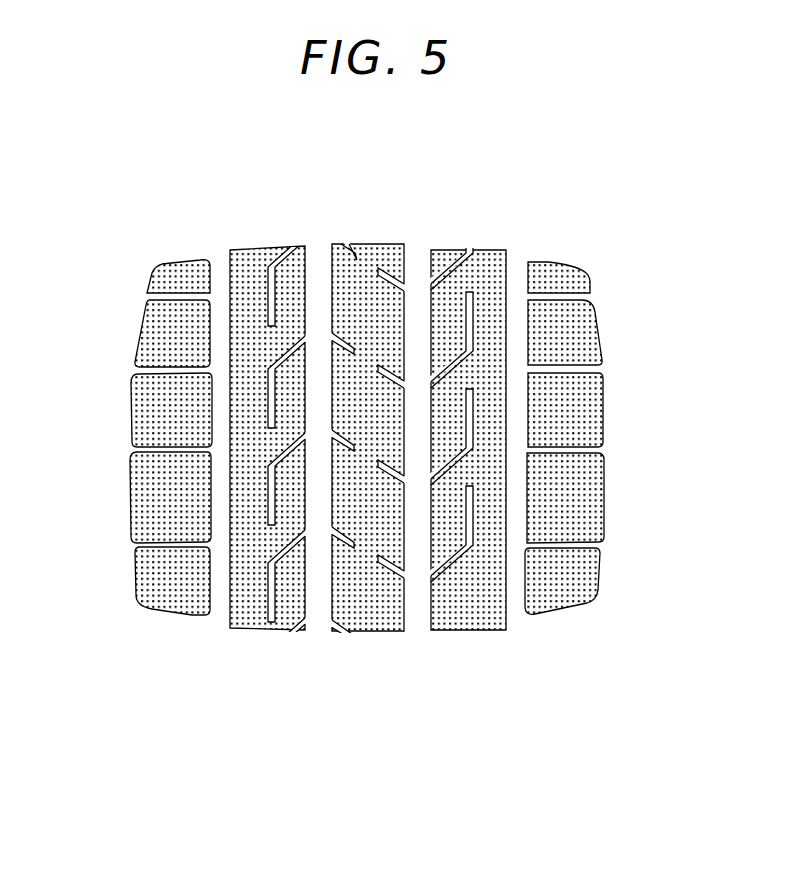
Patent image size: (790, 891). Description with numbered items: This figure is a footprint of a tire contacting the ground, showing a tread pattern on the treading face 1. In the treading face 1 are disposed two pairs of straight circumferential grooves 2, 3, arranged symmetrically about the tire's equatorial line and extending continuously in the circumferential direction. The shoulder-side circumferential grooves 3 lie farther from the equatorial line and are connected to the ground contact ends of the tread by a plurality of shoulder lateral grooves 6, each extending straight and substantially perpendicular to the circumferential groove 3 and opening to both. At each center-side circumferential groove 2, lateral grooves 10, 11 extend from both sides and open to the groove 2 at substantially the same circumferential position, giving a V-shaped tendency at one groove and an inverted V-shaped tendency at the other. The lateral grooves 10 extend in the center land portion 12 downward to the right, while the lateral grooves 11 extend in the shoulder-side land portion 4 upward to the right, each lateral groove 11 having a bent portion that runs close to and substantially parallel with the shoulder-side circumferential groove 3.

The treading face 1 is at (361, 469).
The center-side circumferential groove 2 is at (320, 260).
The shoulder-side circumferential groove 3 is at (219, 273).
The land portion 4 is at (242, 628).
The shoulder lateral groove 6 is at (131, 450).
The lateral groove 10 is at (381, 264).
The lateral groove 11 is at (292, 338).
The land portion 12 is at (392, 635).